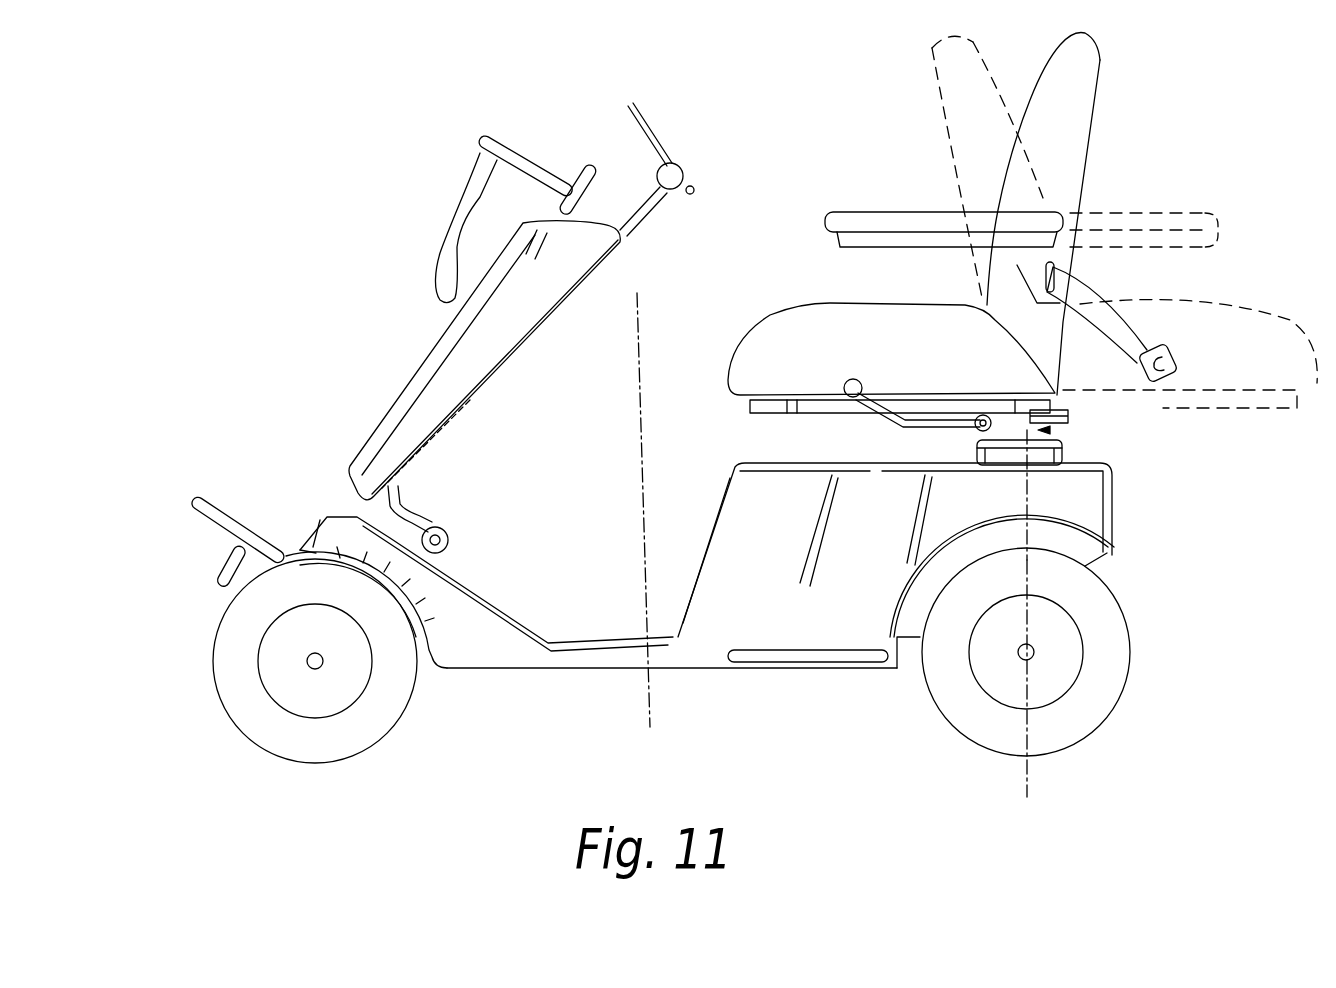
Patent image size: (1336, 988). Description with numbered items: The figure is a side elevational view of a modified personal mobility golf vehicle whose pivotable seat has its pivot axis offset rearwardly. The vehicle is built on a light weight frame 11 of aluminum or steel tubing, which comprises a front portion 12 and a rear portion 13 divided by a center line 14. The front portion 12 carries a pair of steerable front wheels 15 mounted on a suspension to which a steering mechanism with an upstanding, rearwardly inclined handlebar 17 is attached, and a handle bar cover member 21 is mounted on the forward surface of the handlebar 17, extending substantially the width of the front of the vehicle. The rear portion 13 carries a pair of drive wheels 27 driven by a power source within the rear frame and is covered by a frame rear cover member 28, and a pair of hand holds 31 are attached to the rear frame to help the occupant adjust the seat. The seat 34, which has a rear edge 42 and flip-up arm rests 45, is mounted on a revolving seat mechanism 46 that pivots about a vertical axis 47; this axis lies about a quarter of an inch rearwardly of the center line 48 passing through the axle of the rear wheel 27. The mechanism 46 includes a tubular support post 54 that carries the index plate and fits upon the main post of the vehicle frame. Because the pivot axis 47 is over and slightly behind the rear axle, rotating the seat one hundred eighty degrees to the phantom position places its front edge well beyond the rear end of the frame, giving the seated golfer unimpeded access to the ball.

The frame 11 is at (598, 668).
The front portion 12 is at (465, 672).
The rear portion 13 is at (865, 668).
The center line 14 is at (653, 694).
The front wheels 15 is at (225, 655).
The handlebar 17 is at (412, 510).
The handle bar cover member 21 is at (397, 438).
The drive wheels 27 is at (1087, 696).
The frame rear cover member 28 is at (1092, 530).
The hand holds 31 is at (1063, 452).
The seat 34 is at (1078, 95).
The rear edge 42 is at (1058, 395).
The arm rests 45 is at (880, 211).
The revolving seat mechanism 46 is at (763, 427).
The vertical axis 47 is at (1040, 500).
The center line 48 is at (1030, 780).
The tubular support post 54 is at (1052, 431).